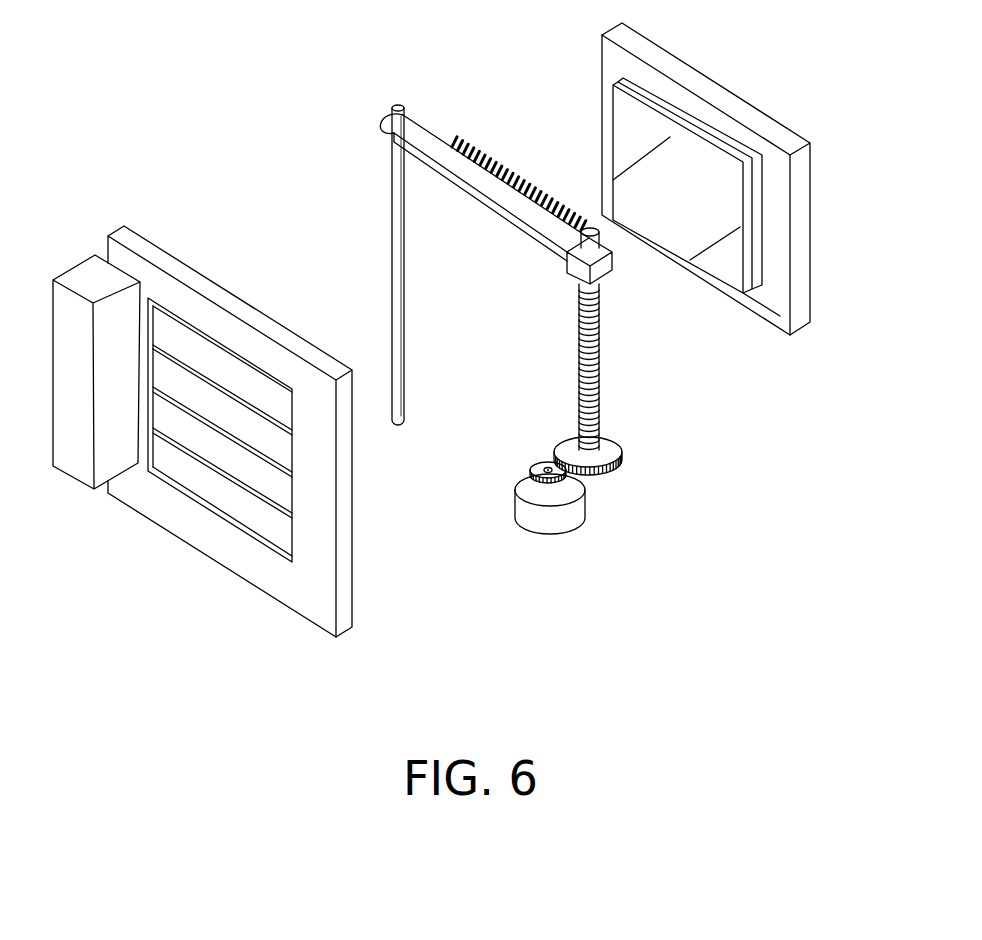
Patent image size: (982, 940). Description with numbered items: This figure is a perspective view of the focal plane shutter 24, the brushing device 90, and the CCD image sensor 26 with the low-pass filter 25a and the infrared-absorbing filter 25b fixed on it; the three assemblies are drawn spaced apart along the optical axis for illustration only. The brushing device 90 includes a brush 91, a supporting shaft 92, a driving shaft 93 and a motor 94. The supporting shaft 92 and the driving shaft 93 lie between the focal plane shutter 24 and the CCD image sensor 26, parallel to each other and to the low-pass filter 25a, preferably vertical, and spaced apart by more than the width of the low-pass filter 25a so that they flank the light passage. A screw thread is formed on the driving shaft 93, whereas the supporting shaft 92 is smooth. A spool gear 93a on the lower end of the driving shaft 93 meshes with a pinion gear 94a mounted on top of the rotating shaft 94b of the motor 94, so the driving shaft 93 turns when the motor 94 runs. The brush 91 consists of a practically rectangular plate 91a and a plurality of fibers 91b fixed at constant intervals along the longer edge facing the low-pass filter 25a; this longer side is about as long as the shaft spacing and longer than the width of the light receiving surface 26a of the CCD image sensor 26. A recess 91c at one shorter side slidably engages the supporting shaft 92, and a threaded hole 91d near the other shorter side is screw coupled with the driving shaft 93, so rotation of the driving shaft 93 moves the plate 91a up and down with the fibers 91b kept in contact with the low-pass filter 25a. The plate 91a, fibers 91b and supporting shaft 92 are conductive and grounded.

The focal plane shutter 24 is at (212, 540).
The low-pass filter 25a is at (723, 265).
The infrared-absorbing filter 25b is at (757, 263).
The CCD image sensor 26 is at (733, 179).
The light receiving surface 26a is at (777, 223).
The brushing device 90 is at (389, 91).
The brush 91 is at (463, 178).
The plate 91a is at (517, 203).
The fibers 91b is at (520, 166).
The recess 91c is at (383, 129).
The threaded hole 91d is at (563, 249).
The supporting shaft 92 is at (391, 268).
The driving shaft 93 is at (603, 361).
The spool gear 93a is at (612, 448).
The motor 94 is at (582, 517).
The pinion gear 94a is at (532, 461).
The rotating shaft 94b is at (547, 468).